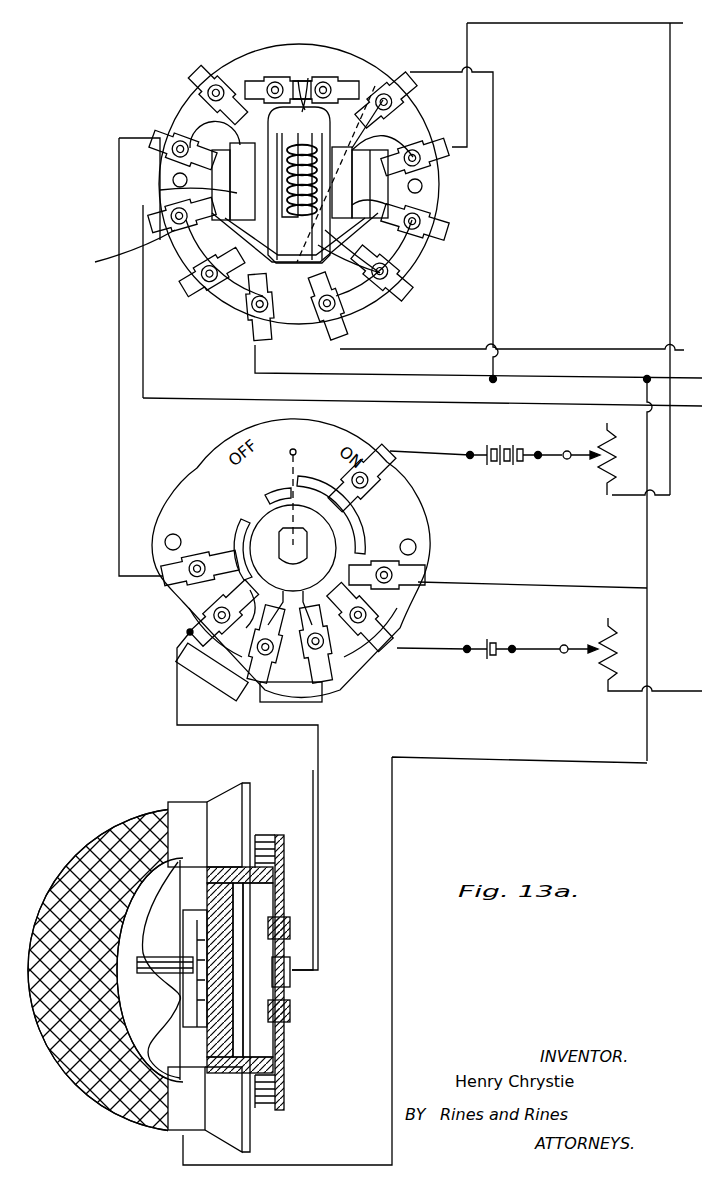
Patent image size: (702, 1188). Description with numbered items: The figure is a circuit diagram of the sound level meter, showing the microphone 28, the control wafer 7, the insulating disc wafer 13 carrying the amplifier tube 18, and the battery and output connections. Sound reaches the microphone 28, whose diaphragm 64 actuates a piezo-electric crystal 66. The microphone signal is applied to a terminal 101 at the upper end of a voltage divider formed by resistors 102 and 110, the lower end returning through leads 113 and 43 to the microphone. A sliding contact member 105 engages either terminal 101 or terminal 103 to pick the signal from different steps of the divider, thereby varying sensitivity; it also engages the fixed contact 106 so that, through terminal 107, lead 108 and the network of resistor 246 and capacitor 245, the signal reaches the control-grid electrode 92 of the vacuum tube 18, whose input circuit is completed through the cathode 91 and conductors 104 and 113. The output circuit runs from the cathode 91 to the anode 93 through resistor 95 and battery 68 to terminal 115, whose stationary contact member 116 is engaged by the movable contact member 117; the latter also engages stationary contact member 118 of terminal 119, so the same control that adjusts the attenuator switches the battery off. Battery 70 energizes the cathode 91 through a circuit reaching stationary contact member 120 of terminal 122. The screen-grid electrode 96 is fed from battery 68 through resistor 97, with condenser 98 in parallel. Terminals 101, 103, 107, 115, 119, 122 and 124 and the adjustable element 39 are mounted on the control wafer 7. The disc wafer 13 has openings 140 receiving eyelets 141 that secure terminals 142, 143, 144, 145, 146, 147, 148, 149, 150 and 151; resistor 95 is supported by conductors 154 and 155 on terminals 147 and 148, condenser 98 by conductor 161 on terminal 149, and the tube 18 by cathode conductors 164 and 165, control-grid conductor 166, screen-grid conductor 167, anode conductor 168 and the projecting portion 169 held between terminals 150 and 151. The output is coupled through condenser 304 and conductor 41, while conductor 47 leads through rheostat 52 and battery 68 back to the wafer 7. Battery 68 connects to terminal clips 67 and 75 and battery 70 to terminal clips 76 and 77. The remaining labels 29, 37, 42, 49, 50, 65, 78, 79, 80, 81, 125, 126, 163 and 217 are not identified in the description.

The control wafer 7 is at (424, 538).
The insulating disc wafer 13 is at (306, 46).
The vacuum tube 18 is at (299, 185).
The microphone 28 is at (80, 838).
The mounting plate 29 is at (252, 790).
The switch 37 is at (148, 590).
The adjustable element 39 is at (274, 572).
The conductor 41 is at (340, 349).
The conductor 42 is at (316, 832).
The conductor 43 is at (252, 354).
The conductor 47 is at (668, 22).
The conductor 49 is at (549, 668).
The indicator 50 is at (294, 485).
The rheostat 52 is at (470, 455).
The diaphragm 64 is at (176, 918).
The conductor 65 is at (549, 668).
The piezo-electric crystal 66 is at (192, 1003).
The terminal clip 67 is at (515, 456).
The battery 68 is at (515, 456).
The battery 70 is at (549, 668).
The terminal clip 75 is at (515, 456).
The terminal clip 76 is at (549, 668).
The terminal clip 77 is at (549, 668).
The resistor 78 is at (549, 668).
The contact 79 is at (515, 456).
The contact 80 is at (549, 668).
The conductor 81 is at (442, 652).
The cathode 91 is at (290, 234).
The control-grid electrode 92 is at (295, 234).
The anode 93 is at (340, 174).
The resistor 95 is at (377, 182).
The screen-grid electrode 96 is at (301, 191).
The resistor 97 is at (380, 197).
The condenser 98 is at (382, 140).
The terminal 101 is at (186, 620).
The resistor 102 is at (214, 678).
The terminal 103 is at (262, 674).
The conductor 104 is at (293, 644).
The sliding contact member 105 is at (299, 528).
The fixed contact 106 is at (244, 518).
The terminal 107 is at (200, 567).
The lead 108 is at (118, 334).
The resistor 110 is at (274, 700).
The conductor 113 is at (544, 588).
The terminal 115 is at (362, 478).
The stationary contact member 116 is at (362, 478).
The movable contact member 117 is at (299, 528).
The stationary contact member 118 is at (389, 578).
The terminal 119 is at (389, 578).
The stationary contact member 120 is at (360, 617).
The terminal 122 is at (360, 617).
The terminal 124 is at (335, 670).
The terminal 125 is at (224, 615).
The terminal 126 is at (336, 644).
The opening 140 is at (194, 94).
The eyelet 141 is at (200, 88).
The terminal 142 is at (150, 140).
The terminal 143 is at (148, 215).
The terminal 144 is at (190, 290).
The terminal 145 is at (250, 326).
The terminal 146 is at (408, 273).
The terminal 147 is at (430, 208).
The terminal 148 is at (440, 142).
The terminal 149 is at (404, 76).
The terminal 150 is at (271, 80).
The terminal 151 is at (331, 78).
The conductor 154 is at (434, 224).
The conductor 155 is at (420, 150).
The conductor 161 is at (305, 90).
The lead 163 is at (349, 251).
The conductor 164 is at (278, 307).
The conductor 165 is at (126, 301).
The conductor 166 is at (212, 272).
The conductor 167 is at (342, 306).
The conductor 168 is at (408, 273).
The projecting portion 169 is at (331, 78).
The conductor 217 is at (146, 378).
The capacitor 245 is at (180, 186).
The resistor 246 is at (170, 167).
The condenser 304 is at (410, 262).